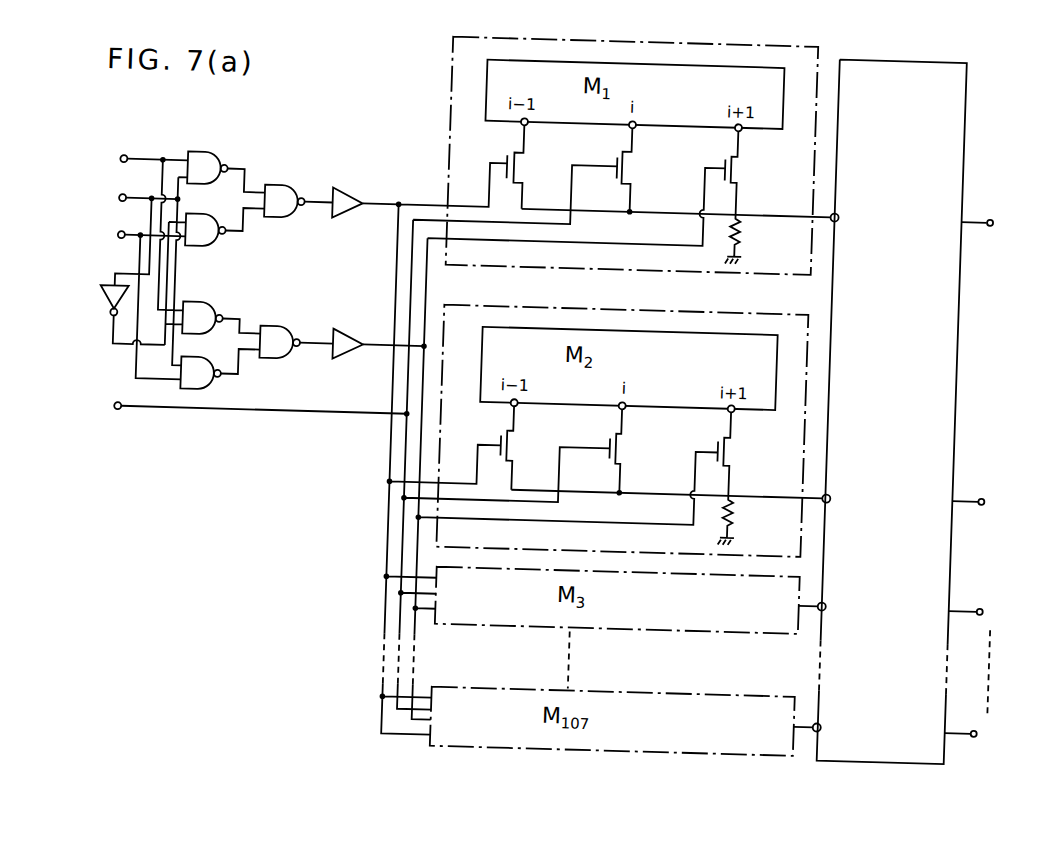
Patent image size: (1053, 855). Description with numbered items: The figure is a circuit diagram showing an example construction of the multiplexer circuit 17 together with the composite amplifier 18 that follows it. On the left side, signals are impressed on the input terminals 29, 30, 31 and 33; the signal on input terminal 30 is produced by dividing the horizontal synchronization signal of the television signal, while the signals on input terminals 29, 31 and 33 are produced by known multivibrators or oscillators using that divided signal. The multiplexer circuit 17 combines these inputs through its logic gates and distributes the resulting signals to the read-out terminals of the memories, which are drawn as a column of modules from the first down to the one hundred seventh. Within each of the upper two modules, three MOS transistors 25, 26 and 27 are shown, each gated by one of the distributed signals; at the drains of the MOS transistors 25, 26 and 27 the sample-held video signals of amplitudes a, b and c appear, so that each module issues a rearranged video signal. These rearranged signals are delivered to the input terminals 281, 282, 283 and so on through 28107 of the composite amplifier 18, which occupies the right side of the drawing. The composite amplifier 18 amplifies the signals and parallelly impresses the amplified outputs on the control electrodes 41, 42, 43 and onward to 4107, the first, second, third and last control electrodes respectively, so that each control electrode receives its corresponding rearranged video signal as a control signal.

The multiplexer circuit 17 is at (344, 142).
The composite amplifier 18 is at (903, 36).
The MOS transistor 25 is at (531, 152).
The MOS transistor 26 is at (639, 153).
The MOS transistor 27 is at (746, 155).
The input terminal 29 is at (125, 158).
The input terminal 30 is at (125, 197).
The input terminal 31 is at (126, 234).
The input terminal 33 is at (129, 407).
The input terminal of the composite amplifier 281 is at (843, 190).
The input terminal of the composite amplifier 282 is at (844, 471).
The input terminal of the composite amplifier 283 is at (843, 579).
The input terminal of the composite amplifier 28107 is at (842, 700).
The control electrode 41 is at (991, 230).
The control electrode 42 is at (982, 509).
The control electrode 43 is at (979, 615).
The control electrode 4107 is at (983, 737).